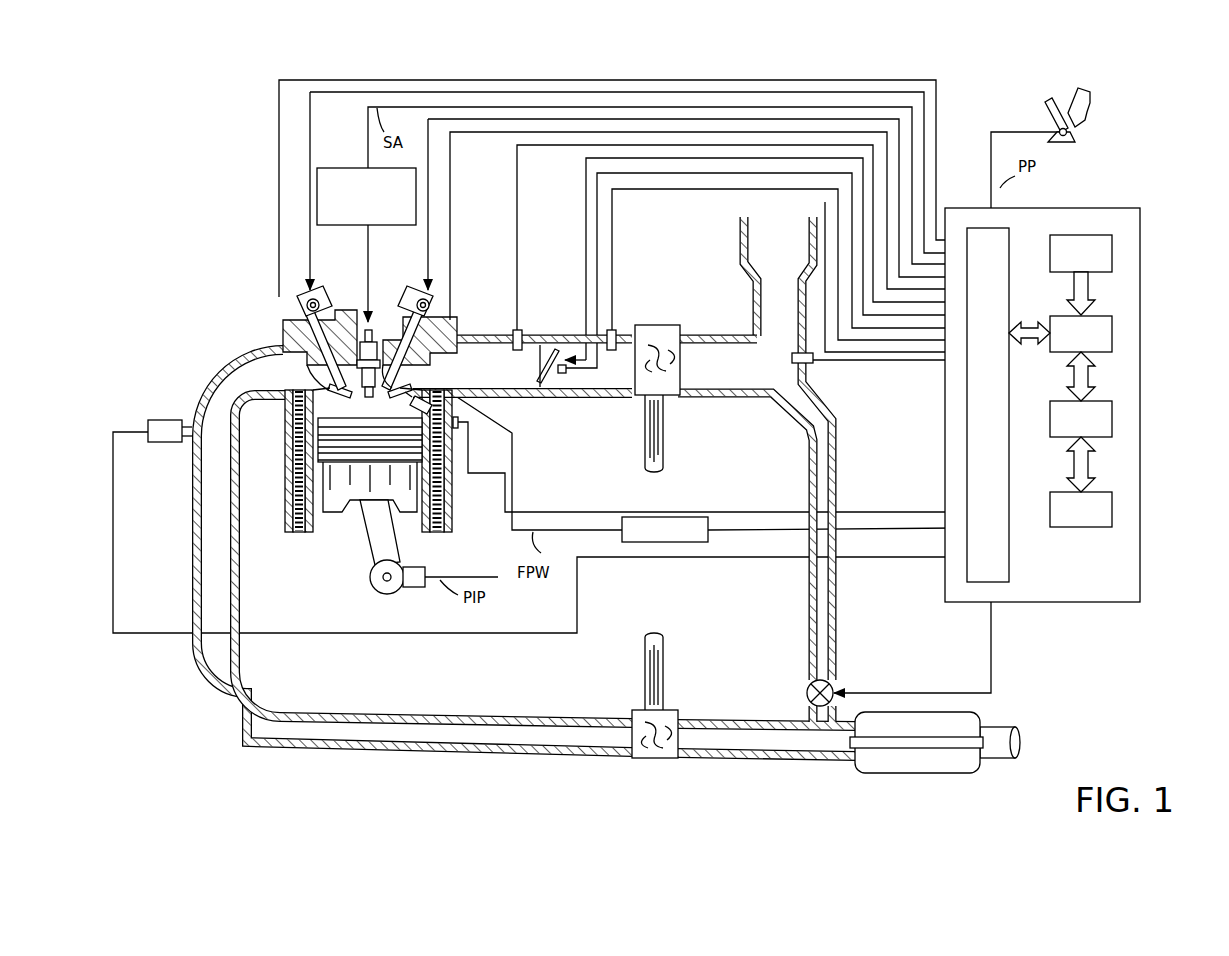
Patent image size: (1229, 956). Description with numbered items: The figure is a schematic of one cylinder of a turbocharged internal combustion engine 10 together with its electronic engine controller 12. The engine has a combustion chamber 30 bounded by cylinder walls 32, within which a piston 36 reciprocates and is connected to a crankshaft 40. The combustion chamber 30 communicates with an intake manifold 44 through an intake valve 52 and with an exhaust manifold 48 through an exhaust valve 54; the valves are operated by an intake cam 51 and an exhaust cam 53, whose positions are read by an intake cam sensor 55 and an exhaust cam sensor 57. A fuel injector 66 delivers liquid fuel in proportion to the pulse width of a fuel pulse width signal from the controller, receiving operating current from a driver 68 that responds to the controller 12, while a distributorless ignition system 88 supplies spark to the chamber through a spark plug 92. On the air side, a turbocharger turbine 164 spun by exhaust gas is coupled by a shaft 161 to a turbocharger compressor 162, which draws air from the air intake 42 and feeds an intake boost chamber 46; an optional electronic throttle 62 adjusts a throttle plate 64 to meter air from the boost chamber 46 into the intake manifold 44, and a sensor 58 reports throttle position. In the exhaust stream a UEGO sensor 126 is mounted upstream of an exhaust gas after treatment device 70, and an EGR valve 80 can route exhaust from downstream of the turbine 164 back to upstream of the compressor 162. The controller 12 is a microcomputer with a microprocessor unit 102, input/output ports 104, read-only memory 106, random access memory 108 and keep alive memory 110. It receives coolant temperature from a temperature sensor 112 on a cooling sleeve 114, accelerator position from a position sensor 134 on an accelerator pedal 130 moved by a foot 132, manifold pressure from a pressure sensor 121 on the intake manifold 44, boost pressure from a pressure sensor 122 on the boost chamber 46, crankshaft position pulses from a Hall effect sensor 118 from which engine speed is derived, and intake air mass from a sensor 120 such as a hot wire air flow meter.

The internal combustion engine 10 is at (230, 280).
The electronic engine controller 12 is at (1080, 392).
The combustion chamber 30 is at (287, 500).
The cylinder walls 32 is at (315, 540).
The piston 36 is at (356, 492).
The crankshaft 40 is at (378, 592).
The air intake 42 is at (778, 285).
The intake manifold 44 is at (522, 366).
The intake boost chamber 46 is at (715, 530).
The exhaust manifold 48 is at (526, 553).
The intake cam 51 is at (418, 290).
The intake valve 52 is at (415, 385).
The exhaust cam 53 is at (320, 290).
The exhaust valve 54 is at (283, 350).
The intake cam sensor 55 is at (435, 308).
The exhaust cam sensor 57 is at (300, 305).
The throttle position sensor 58 is at (566, 373).
The electronic throttle 62 is at (540, 347).
The throttle plate 64 is at (557, 349).
The fuel injector 66 is at (460, 405).
The driver 68 is at (710, 536).
The exhaust gas after treatment device 70 is at (918, 773).
The exhaust gas recirculation (EGR) valve 80 is at (809, 683).
The distributorless ignition system 88 is at (325, 168).
The spark plug 92 is at (372, 328).
The microprocessor unit 102 is at (1112, 333).
The input/output ports 104 is at (1009, 236).
The read-only memory 106 is at (1112, 252).
The random access memory 108 is at (1112, 418).
The keep alive memory 110 is at (1112, 505).
The temperature sensor 112 is at (460, 433).
The cooling sleeve 114 is at (446, 505).
The Hall effect sensor 118 is at (417, 588).
The air mass sensor 120 is at (808, 363).
The pressure sensor 121 is at (513, 334).
The pressure sensor 122 is at (613, 334).
The Universal Exhaust Gas Oxygen (UEGO) sensor 126 is at (148, 422).
The accelerator pedal 130 is at (1047, 115).
The foot 132 is at (1090, 100).
The position sensor 134 is at (1075, 132).
The shaft 161 is at (646, 422).
The turbocharger compressor 162 is at (660, 325).
The turbocharger turbine 164 is at (637, 710).